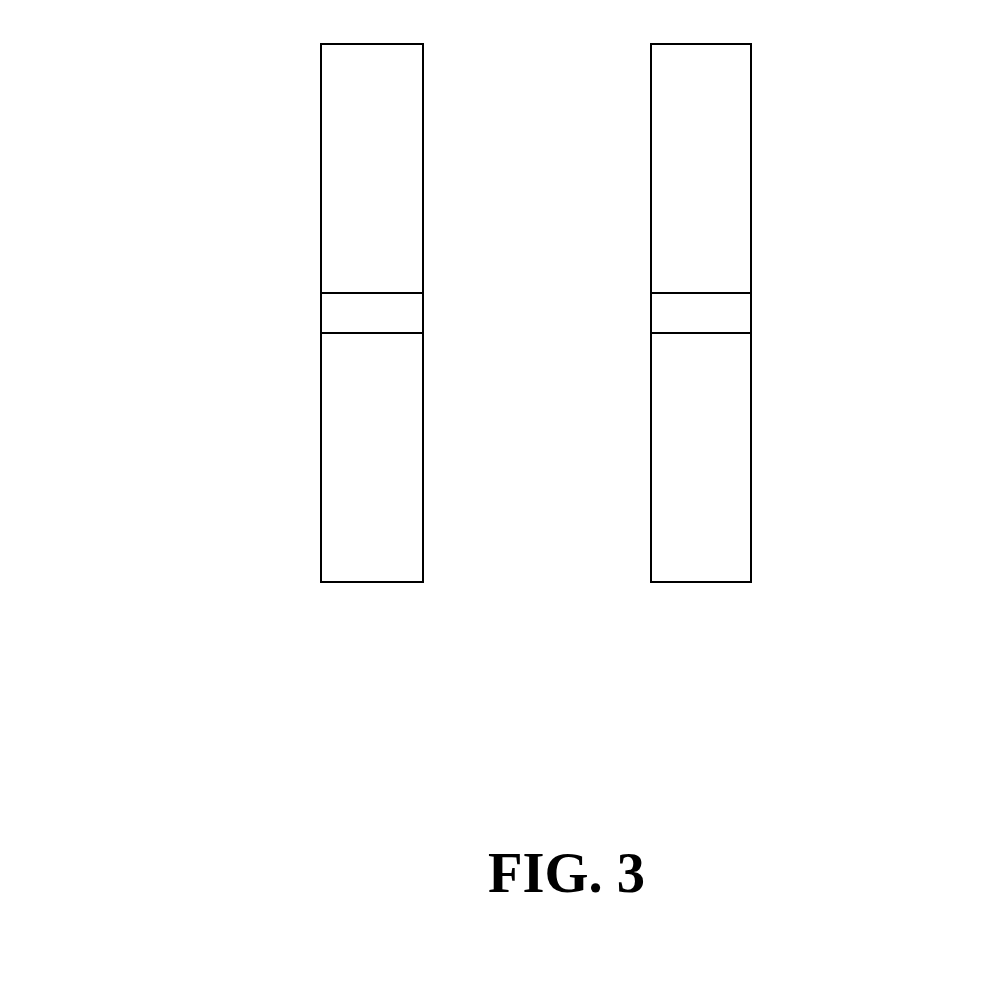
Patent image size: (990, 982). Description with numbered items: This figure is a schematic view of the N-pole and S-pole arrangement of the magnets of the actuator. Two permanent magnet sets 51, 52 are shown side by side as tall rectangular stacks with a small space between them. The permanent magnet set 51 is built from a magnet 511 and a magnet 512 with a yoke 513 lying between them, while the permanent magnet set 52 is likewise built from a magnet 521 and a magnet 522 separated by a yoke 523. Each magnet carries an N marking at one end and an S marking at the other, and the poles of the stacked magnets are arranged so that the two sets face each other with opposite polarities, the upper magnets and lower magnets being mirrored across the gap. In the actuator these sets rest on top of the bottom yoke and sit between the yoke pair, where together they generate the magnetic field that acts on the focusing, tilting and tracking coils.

The permanent magnet set 51 is at (707, 603).
The magnet 511 is at (725, 470).
The magnet 512 is at (731, 170).
The yoke 513 is at (729, 320).
The permanent magnet set 52 is at (371, 610).
The magnet 521 is at (333, 470).
The magnet 522 is at (337, 170).
The yoke 523 is at (330, 318).